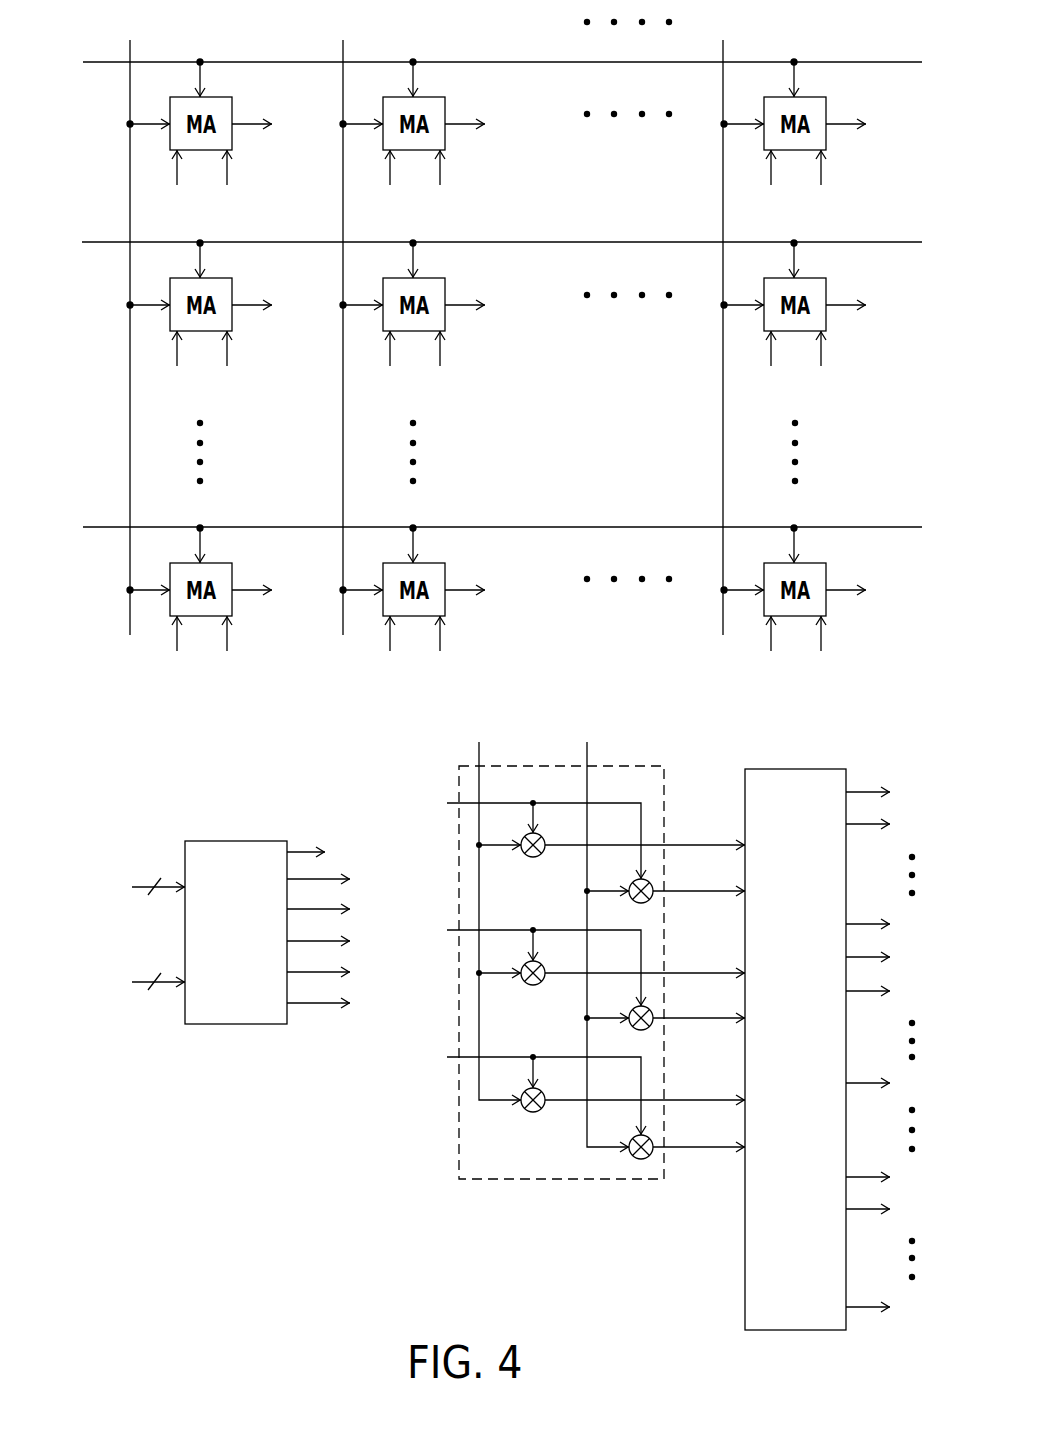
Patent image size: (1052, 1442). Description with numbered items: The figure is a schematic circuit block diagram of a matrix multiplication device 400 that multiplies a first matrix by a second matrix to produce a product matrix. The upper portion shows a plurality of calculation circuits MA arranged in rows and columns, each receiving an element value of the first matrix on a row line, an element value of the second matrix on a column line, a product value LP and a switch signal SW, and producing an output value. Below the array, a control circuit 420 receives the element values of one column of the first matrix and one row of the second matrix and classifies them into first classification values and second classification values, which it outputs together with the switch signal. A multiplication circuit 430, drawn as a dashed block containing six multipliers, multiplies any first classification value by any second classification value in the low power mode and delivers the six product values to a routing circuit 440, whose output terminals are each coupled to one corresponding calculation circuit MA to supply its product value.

The matrix multiplication device 400 is at (248, 1254).
The control circuit 420 is at (235, 1024).
The multiplication circuit 430 is at (561, 1180).
The routing circuit 440 is at (745, 1293).